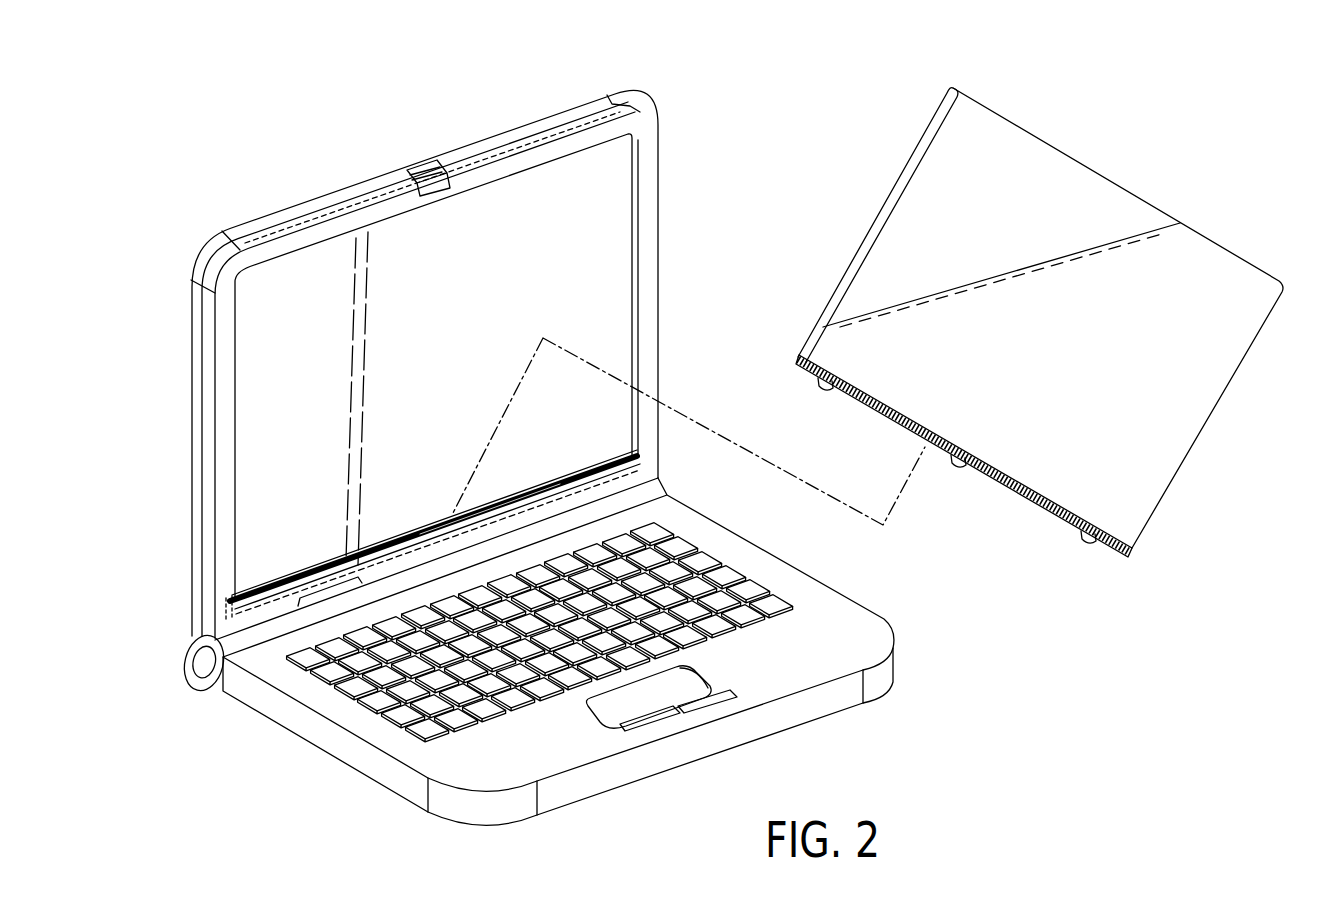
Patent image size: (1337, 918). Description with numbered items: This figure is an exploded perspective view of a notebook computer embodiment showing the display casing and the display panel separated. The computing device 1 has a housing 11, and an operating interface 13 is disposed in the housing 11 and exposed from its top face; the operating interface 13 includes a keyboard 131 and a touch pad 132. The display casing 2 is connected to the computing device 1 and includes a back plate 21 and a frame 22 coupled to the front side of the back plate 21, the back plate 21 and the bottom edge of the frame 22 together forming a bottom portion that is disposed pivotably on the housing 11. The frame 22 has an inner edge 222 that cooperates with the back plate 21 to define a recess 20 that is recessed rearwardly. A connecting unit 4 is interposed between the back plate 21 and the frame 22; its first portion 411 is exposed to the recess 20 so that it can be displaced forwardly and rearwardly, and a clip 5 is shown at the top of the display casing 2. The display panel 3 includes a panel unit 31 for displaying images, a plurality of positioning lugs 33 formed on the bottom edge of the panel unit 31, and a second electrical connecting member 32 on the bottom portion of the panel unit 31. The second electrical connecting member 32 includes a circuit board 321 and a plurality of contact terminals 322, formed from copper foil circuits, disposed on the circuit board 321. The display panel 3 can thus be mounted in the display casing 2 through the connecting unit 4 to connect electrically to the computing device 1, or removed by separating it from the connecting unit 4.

The computing device 1 is at (823, 580).
The housing 11 is at (820, 607).
The operating interface 13 is at (706, 546).
The keyboard 131 is at (688, 578).
The touch pad 132 is at (678, 688).
The display casing 2 is at (668, 212).
The recess 20 is at (592, 293).
The back plate 21 is at (192, 327).
The frame 22 is at (223, 394).
The inner edge 222 is at (640, 333).
The connecting unit 4 is at (644, 456).
The first portion 411 is at (548, 490).
The fastening clip 5 is at (421, 158).
The display panel 3 is at (1160, 197).
The panel unit 31 is at (1180, 272).
The second electrical connecting member 32 is at (1112, 555).
The circuit board 321 is at (1035, 505).
The contact terminals 322 is at (1006, 480).
The positioning lug 33 is at (826, 390).